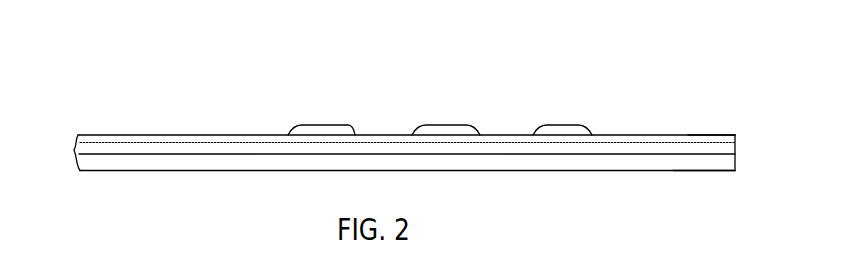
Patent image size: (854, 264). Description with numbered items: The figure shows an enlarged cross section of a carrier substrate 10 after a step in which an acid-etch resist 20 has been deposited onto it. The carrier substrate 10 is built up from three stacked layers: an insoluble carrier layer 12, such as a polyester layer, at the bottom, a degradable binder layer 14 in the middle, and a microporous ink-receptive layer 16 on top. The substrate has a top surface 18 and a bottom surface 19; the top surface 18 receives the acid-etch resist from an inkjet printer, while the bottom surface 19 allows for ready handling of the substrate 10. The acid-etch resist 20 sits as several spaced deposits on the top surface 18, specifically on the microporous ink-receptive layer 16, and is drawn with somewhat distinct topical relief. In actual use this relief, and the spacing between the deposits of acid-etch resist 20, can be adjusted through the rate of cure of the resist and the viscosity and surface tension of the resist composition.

The carrier substrate 10 is at (430, 122).
The insoluble carrier layer 12 is at (148, 162).
The degradable binder layer 14 is at (175, 148).
The microporous ink-receptive layer 16 is at (240, 137).
The top surface 18 is at (688, 135).
The bottom surface 19 is at (673, 172).
The acid-etch resist 20 is at (327, 128).